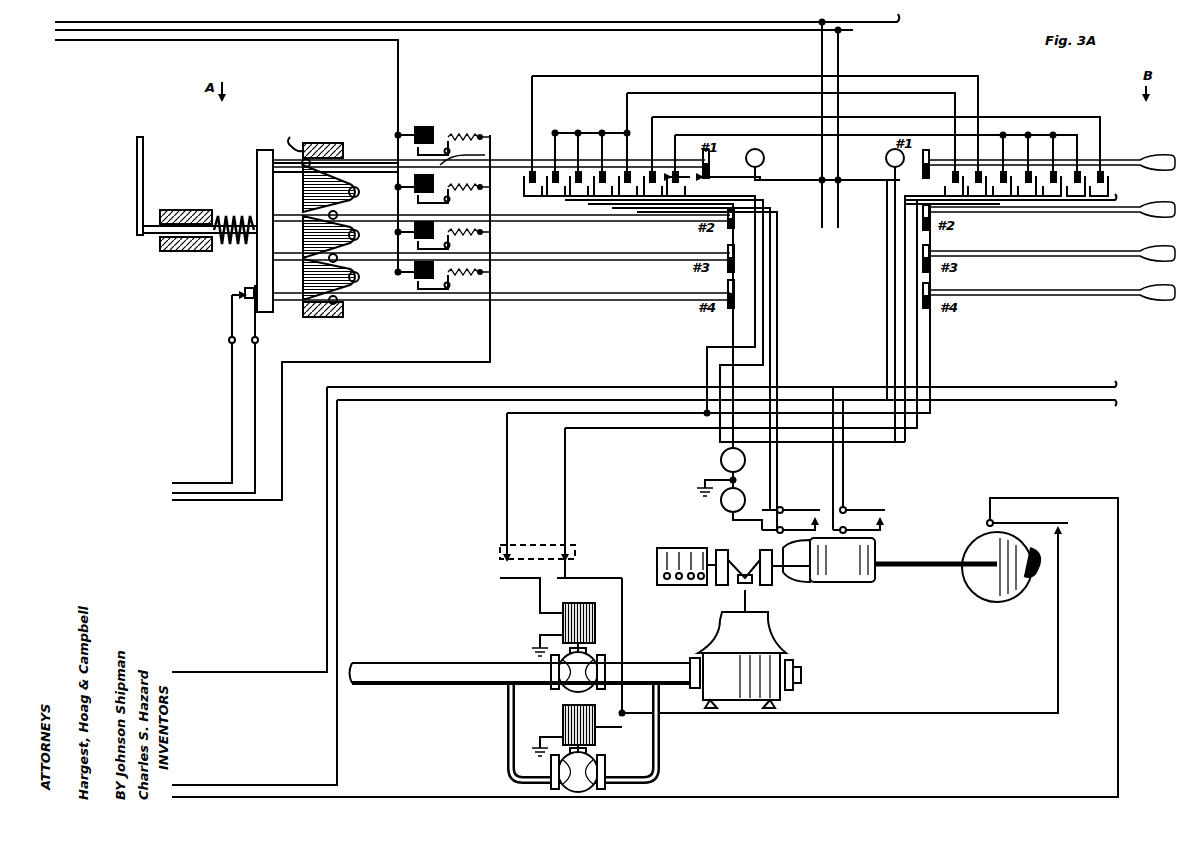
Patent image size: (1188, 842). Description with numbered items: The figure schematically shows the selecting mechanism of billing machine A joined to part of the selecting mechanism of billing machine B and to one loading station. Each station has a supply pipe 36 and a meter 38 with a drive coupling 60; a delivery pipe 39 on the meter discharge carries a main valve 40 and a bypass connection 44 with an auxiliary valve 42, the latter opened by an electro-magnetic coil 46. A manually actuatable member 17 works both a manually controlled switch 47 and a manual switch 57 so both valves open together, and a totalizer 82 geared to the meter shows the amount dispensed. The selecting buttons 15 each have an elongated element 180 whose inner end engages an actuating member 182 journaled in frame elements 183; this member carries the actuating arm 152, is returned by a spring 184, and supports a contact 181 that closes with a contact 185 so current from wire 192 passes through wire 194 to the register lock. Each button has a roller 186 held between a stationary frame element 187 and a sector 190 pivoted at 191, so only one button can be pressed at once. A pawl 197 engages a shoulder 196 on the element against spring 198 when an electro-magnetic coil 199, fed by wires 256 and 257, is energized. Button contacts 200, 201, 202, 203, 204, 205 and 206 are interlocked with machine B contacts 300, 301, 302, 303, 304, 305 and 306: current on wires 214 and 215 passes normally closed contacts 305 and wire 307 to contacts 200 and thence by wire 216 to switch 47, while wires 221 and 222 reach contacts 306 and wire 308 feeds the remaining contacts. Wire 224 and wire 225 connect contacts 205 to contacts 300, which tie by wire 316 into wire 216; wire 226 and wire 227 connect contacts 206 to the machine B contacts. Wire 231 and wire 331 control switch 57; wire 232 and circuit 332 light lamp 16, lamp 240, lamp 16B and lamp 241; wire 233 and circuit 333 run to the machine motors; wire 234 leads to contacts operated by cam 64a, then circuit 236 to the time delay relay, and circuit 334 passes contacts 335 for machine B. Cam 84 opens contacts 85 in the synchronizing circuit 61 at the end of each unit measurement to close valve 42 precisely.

The wire 214 is at (189, 25).
The wire 221 is at (124, 33).
The wire 257 is at (63, 46).
The actuating arm 152 is at (145, 150).
The actuating member 182 is at (257, 170).
The frame elements 183 is at (190, 210).
The spring 184 is at (236, 216).
The contact 185 is at (232, 310).
The roller 186 is at (287, 137).
The stationary frame element 187 is at (315, 143).
The sector 190 is at (306, 192).
The pivot 191 is at (359, 192).
The elongated element 180 is at (345, 160).
The contact 181 is at (246, 288).
The wire 194 is at (180, 483).
The wire 192 is at (208, 493).
The wire 256 is at (178, 502).
The electro-magnetic coil 199 is at (424, 127).
The spring 198 is at (462, 135).
The shoulder 196 is at (485, 155).
The pawl 197 is at (489, 156).
The contacts 200 is at (530, 172).
The contacts 201 is at (548, 164).
The contacts 202 is at (572, 164).
The contacts 203 is at (598, 170).
The contacts 204 is at (620, 165).
The contacts 205 is at (650, 170).
The contacts 206 is at (675, 170).
The wire 224 is at (800, 185).
The wire 215 is at (856, 185).
The wire 222 is at (856, 165).
The wire 226 is at (800, 165).
The lamp 16 is at (764, 153).
The lamp 16B is at (877, 160).
The contacts 306 is at (708, 77).
The wire 307 is at (975, 80).
The wire 308 is at (878, 95).
The contacts 305 is at (960, 165).
The contacts 304 is at (1006, 160).
The contacts 303 is at (1032, 160).
The contacts 302 is at (1060, 160).
The contacts 301 is at (1085, 160).
The contacts 300 is at (1122, 158).
The wire 225 is at (880, 146).
The wire 227 is at (880, 157).
The wire 316 is at (1118, 200).
The circuit 334 is at (1000, 200).
The circuit 333 is at (1116, 385).
The wire 331 is at (886, 305).
The circuit 332 is at (931, 378).
The wire 216 is at (750, 345).
The wire 231 is at (556, 205).
The wire 232 is at (580, 208).
The wire 233 is at (605, 212).
The wire 234 is at (645, 215).
The lamp 240 is at (721, 462).
The lamp 241 is at (721, 503).
The circuit 236 is at (770, 530).
The contacts 335 is at (882, 510).
The synchronizing circuit 61 is at (1119, 683).
The contacts 85 is at (1070, 528).
The manually actuatable member 17 is at (528, 545).
The manually controlled switch 47 is at (500, 560).
The manual switch 57 is at (575, 578).
The buttons 15 is at (598, 625).
The main valve 40 is at (600, 665).
The delivery pipe 39 is at (441, 662).
The bypass connection 44 is at (507, 727).
The electro-magnetic coil 46 is at (597, 732).
The auxiliary valve 42 is at (597, 765).
The meter 38 is at (774, 642).
The pipe 36 is at (803, 673).
The coupling 60 is at (768, 590).
The totalizer 82 is at (660, 548).
The cam 64a is at (850, 583).
The cam 84 is at (1004, 600).